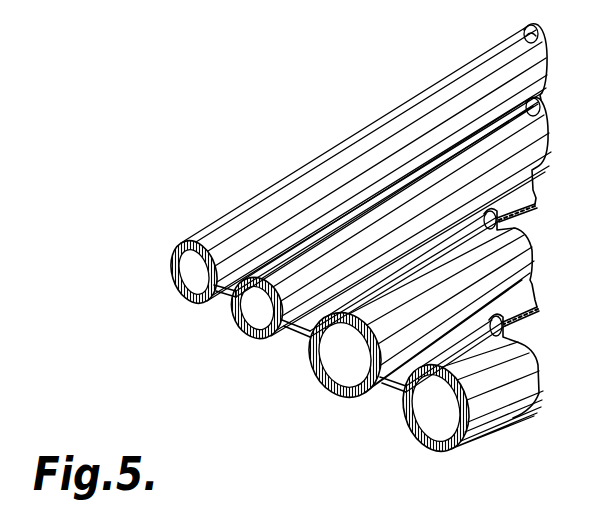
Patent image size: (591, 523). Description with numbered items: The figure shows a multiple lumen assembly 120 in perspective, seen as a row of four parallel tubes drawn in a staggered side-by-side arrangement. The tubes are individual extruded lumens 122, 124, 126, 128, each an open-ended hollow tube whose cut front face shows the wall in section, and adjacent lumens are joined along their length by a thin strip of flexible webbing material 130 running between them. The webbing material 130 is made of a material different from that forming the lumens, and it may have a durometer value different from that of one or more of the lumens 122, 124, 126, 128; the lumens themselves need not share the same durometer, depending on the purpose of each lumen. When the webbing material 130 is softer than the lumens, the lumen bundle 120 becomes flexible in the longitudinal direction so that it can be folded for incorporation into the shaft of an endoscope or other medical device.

The multiple lumen assembly 120 is at (328, 129).
The extruded lumen 122 is at (422, 440).
The extruded lumen 124 is at (340, 398).
The extruded lumen 126 is at (252, 340).
The extruded lumen 128 is at (178, 288).
The flexible webbing material 130 is at (226, 302).